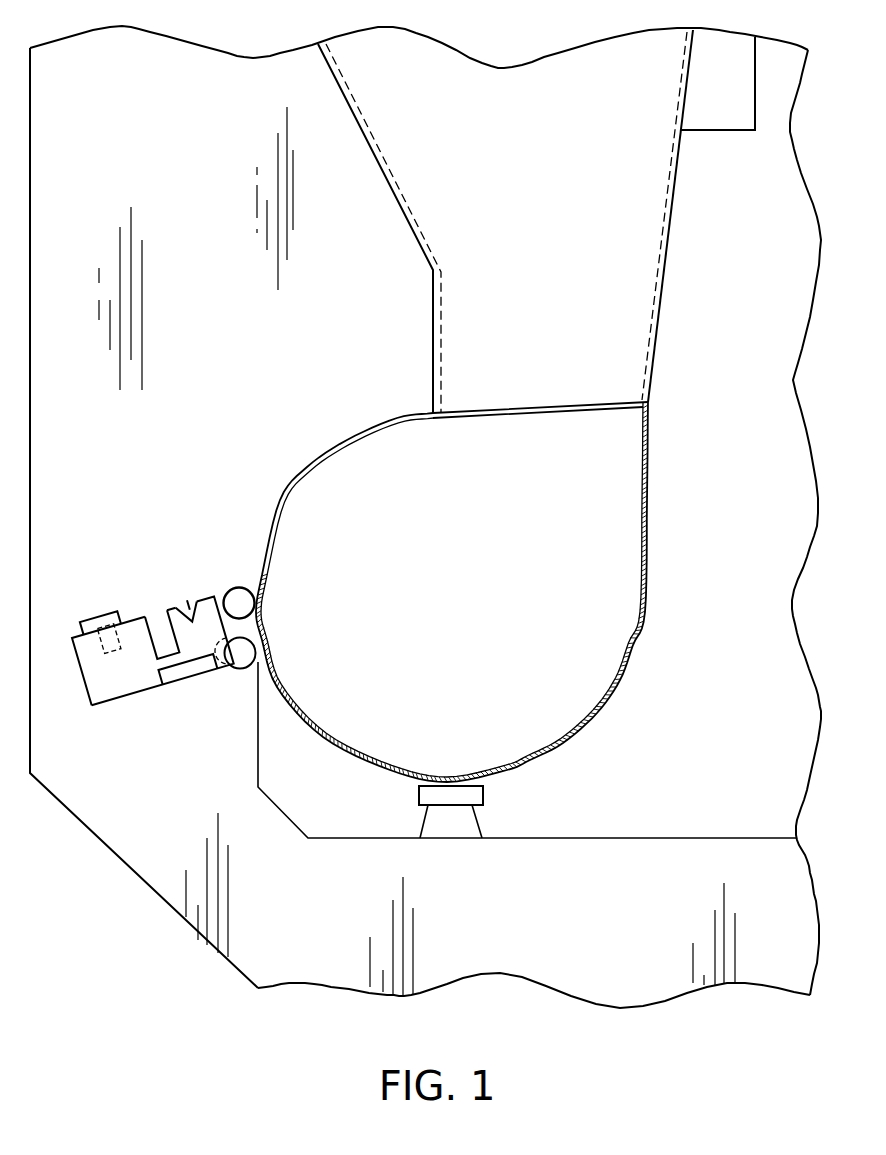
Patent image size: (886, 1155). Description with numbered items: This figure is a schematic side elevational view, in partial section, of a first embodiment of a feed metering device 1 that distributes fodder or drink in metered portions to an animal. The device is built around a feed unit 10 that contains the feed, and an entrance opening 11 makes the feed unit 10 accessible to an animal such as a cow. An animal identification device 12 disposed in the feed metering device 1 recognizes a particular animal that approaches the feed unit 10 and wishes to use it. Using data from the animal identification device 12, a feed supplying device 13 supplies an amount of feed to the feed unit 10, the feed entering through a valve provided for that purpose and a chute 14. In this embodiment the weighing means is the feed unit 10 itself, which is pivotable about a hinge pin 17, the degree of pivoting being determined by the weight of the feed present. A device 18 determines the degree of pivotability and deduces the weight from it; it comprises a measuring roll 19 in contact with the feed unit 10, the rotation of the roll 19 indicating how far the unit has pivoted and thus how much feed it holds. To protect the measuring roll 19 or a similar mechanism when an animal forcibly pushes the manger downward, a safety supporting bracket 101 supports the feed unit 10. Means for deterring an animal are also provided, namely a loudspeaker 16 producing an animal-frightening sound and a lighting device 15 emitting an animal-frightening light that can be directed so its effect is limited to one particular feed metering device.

The feed metering device 1 is at (660, 543).
The feed unit 10 is at (622, 682).
The entrance opening 11 is at (333, 450).
The animal identification device 12 is at (150, 646).
The feed supplying device 13 is at (713, 122).
The chute 14 is at (665, 290).
The lighting device 15 is at (162, 634).
The loudspeaker 16 is at (188, 611).
The hinge pin 17 is at (240, 600).
The device for determining the degree of pivotability 18 is at (187, 669).
The measuring roll 19 is at (257, 662).
The safety supporting bracket 101 is at (467, 825).